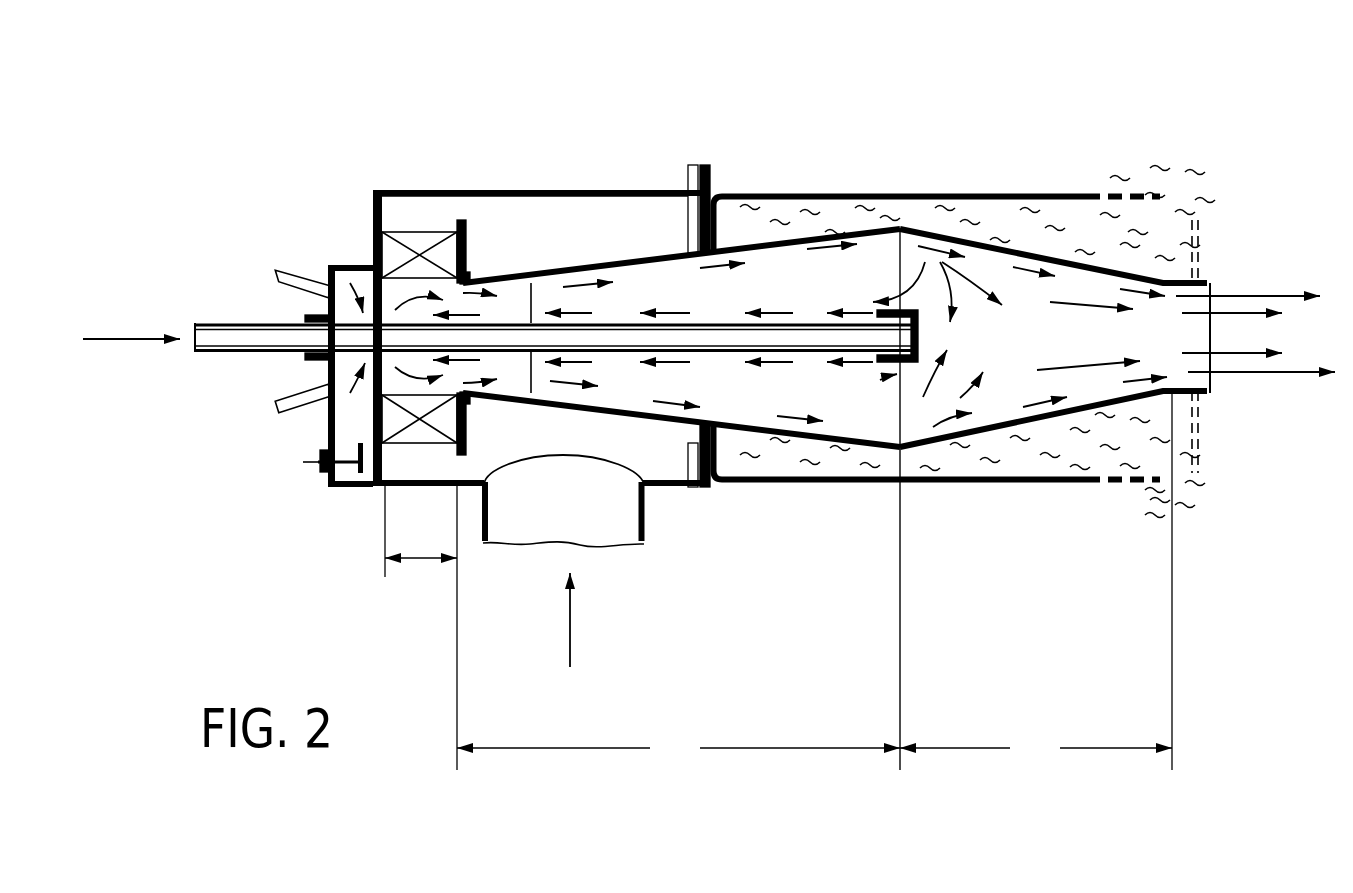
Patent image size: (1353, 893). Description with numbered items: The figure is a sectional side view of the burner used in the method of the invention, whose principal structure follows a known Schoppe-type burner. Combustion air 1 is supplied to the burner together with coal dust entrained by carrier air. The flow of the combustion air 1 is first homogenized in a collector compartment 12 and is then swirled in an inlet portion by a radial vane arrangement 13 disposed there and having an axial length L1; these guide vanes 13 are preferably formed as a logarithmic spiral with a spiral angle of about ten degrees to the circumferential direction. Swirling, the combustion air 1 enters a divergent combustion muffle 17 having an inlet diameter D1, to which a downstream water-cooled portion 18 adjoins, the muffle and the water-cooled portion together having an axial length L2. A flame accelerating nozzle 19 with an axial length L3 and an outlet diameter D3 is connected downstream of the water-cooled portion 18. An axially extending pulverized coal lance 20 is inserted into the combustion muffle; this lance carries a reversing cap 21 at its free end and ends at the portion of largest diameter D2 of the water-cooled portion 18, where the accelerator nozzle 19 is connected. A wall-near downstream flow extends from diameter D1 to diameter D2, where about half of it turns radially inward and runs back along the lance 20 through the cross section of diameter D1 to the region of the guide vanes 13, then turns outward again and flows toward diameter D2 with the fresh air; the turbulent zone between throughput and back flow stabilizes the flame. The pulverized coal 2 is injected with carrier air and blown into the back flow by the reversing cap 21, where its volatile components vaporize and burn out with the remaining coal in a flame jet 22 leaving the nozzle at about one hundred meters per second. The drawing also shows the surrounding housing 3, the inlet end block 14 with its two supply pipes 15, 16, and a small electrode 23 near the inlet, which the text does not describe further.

The combustion air 1 is at (570, 645).
The pulverized coal 2 is at (112, 340).
The burner housing 3 is at (413, 187).
The collector compartment 12 is at (614, 236).
The radial vane arrangement 13 is at (420, 238).
The inlet end block 14 is at (370, 207).
The upper supply pipe 15 is at (277, 272).
The lower supply pipe 16 is at (277, 412).
The divergent combustion muffle 17 is at (641, 262).
The water-cooled portion 18 is at (797, 242).
The flame accelerating nozzle 19 is at (1048, 260).
The pulverized coal lance 20 is at (735, 340).
The reversing cap 21 is at (913, 363).
The flame jet 22 is at (1250, 296).
The ignition electrode 23 is at (352, 488).
The inlet diameter D1 is at (467, 307).
The largest diameter D2 is at (900, 228).
The outlet diameter D3 is at (1210, 378).
The axial length of vane arrangement L1 is at (421, 531).
The axial length of muffle and water-cooled portion L2 is at (678, 628).
The axial length of nozzle L3 is at (1036, 581).